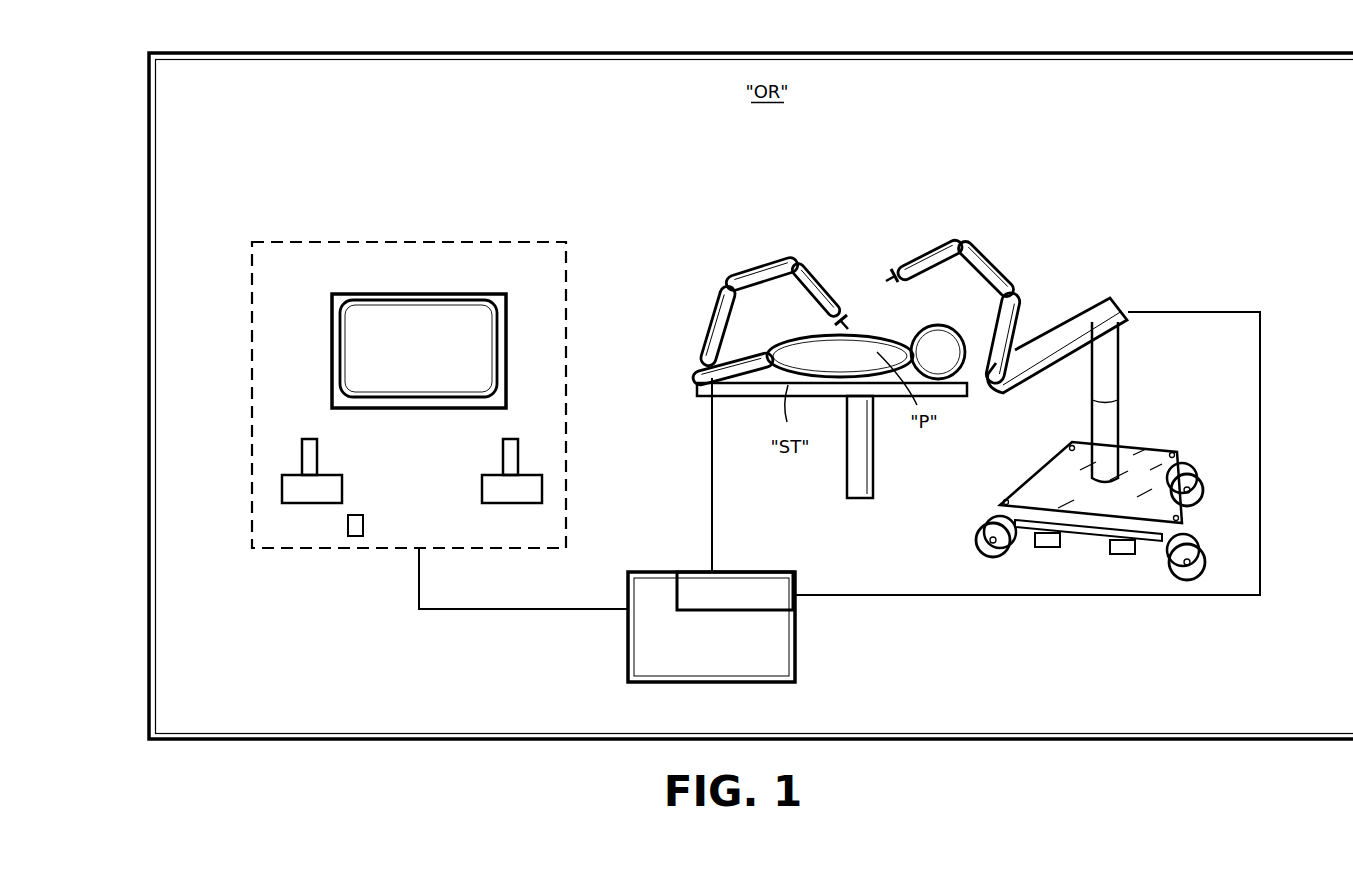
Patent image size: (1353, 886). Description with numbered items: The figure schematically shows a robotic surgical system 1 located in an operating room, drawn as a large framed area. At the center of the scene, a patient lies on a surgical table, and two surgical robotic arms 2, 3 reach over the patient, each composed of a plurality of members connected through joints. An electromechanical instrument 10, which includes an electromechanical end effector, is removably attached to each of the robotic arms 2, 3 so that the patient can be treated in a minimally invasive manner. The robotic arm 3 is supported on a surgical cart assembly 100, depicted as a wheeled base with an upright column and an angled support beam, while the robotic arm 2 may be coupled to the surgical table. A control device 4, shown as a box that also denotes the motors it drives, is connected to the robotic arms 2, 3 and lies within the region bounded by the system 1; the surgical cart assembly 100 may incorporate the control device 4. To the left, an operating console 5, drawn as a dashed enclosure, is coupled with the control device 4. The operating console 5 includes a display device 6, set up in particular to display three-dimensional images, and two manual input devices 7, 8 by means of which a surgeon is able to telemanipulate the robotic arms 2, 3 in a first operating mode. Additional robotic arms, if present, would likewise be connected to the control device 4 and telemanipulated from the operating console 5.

The robotic surgical system 1 is at (940, 610).
The surgical robotic arm 2 is at (710, 250).
The surgical robotic arm 3 is at (981, 255).
The control device 4 is at (699, 645).
The operating console 5 is at (340, 200).
The display device 6 is at (415, 356).
The manual input device 7 is at (294, 492).
The manual input device 8 is at (511, 492).
The electromechanical instrument 10 is at (845, 320).
The surgical cart assembly 100 is at (1140, 288).